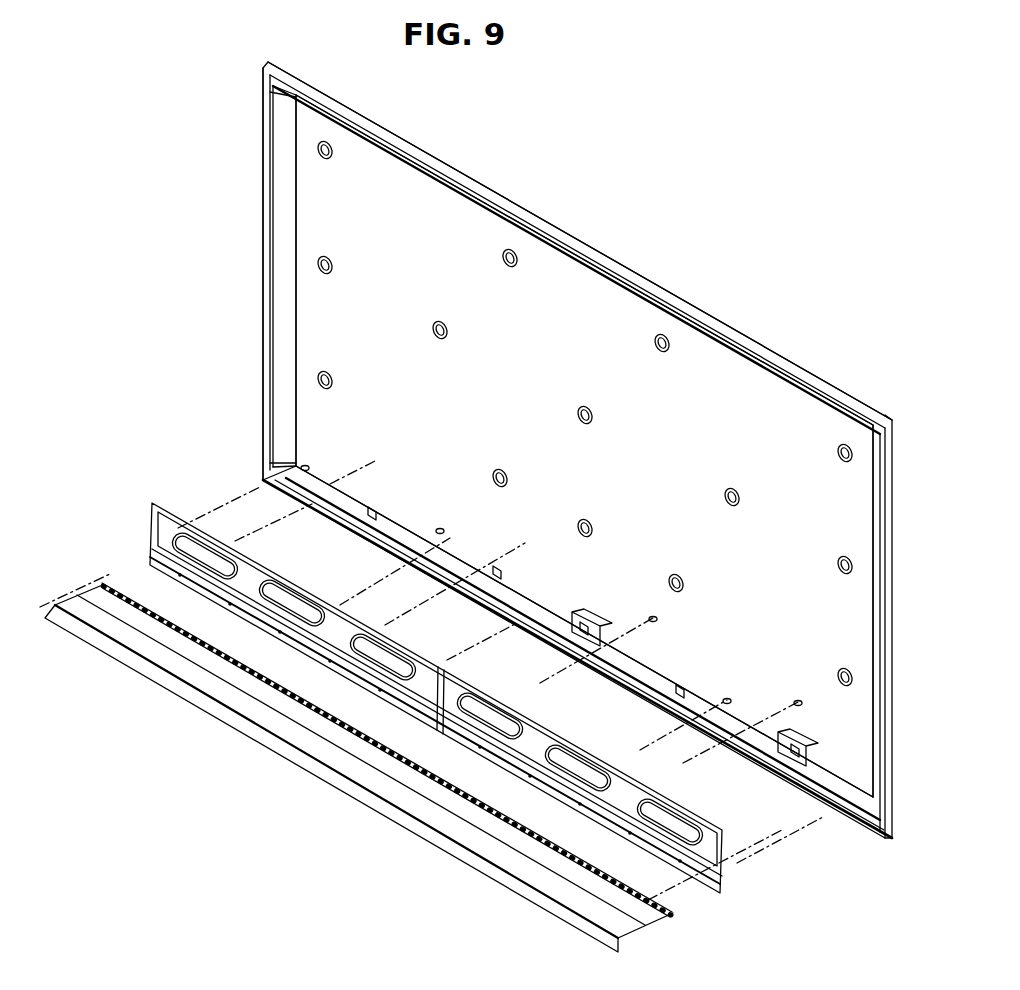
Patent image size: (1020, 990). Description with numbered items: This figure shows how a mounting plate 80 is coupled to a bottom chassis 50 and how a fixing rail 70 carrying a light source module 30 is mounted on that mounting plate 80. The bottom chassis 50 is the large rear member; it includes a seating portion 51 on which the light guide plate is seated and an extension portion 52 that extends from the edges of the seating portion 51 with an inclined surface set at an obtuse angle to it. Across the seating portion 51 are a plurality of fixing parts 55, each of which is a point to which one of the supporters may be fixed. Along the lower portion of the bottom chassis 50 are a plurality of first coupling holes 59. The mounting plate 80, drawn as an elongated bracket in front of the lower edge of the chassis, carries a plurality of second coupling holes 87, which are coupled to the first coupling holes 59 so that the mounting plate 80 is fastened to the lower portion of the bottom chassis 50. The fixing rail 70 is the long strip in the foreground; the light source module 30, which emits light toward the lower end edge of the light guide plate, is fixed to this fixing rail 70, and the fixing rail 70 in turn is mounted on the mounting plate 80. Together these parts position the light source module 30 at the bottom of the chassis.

The light source module 30 is at (121, 589).
The bottom chassis 50 is at (612, 231).
The seating portion 51 is at (553, 292).
The extension portion 52 is at (285, 194).
The fixing part 55 is at (510, 250).
The first coupling hole 59 is at (377, 460).
The fixing rail 70 is at (108, 668).
The mounting plate 80 is at (149, 498).
The second coupling hole 87 is at (223, 550).